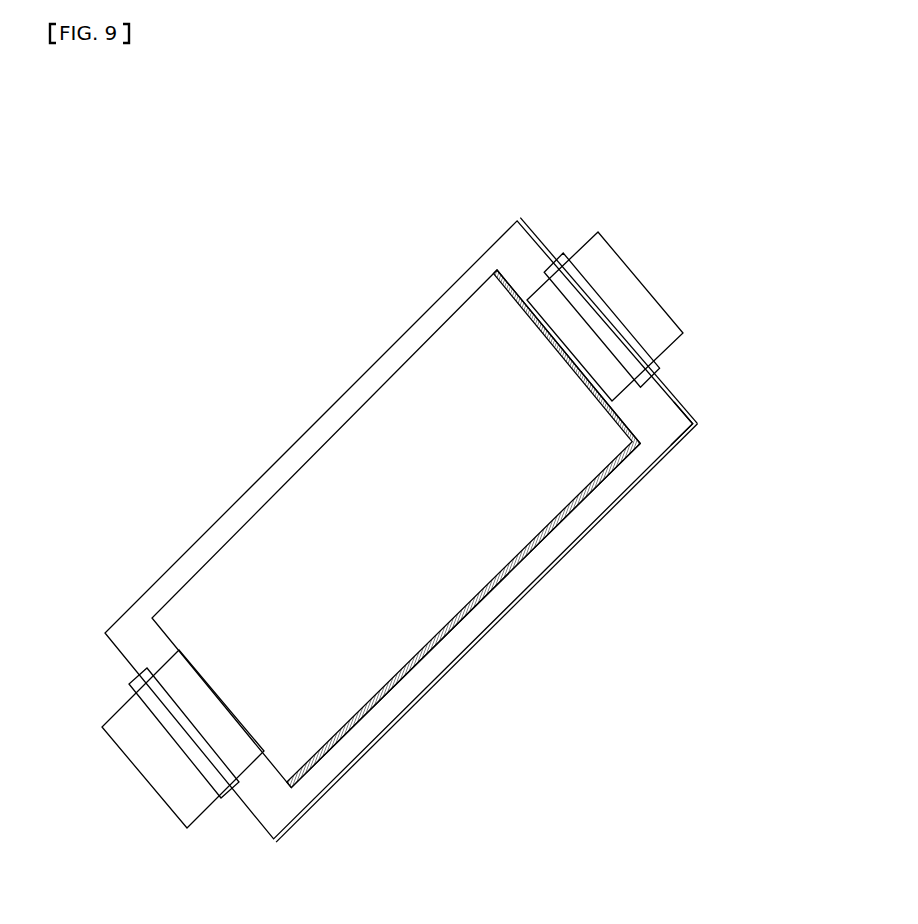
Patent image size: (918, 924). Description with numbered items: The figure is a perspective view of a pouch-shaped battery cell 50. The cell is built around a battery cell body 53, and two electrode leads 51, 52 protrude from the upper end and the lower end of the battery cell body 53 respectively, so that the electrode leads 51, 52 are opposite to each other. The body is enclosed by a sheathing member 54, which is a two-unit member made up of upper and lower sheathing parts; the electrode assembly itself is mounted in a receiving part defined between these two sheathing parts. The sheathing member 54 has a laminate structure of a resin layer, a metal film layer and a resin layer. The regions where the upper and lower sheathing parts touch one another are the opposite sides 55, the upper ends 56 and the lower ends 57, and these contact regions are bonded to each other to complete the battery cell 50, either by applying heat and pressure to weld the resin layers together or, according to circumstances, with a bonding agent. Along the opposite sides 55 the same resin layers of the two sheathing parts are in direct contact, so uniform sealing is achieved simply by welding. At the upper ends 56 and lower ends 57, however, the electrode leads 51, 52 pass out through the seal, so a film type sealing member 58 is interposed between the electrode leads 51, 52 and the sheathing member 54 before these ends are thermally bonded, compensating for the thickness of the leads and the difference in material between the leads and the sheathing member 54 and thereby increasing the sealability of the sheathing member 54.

The pouch-shaped battery cell 50 is at (116, 249).
The electrode lead 51 is at (166, 775).
The electrode lead 52 is at (643, 287).
The battery cell body 53 is at (340, 460).
The sheathing member 54 is at (502, 233).
The opposite sides 55 is at (496, 597).
The upper ends 56 is at (137, 630).
The lower ends 57 is at (674, 424).
The film type sealing member 58 is at (563, 253).